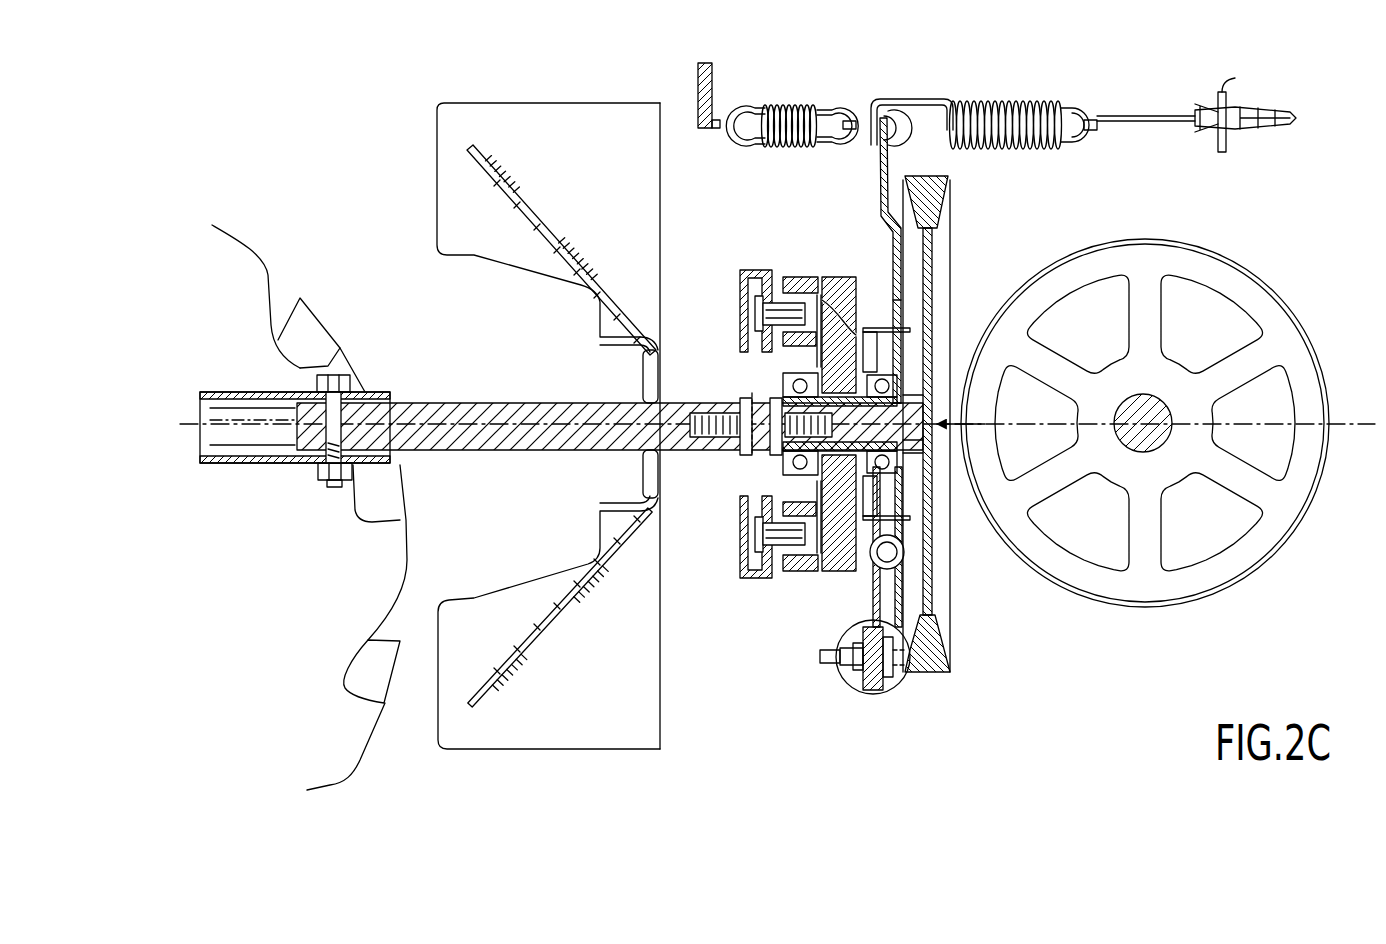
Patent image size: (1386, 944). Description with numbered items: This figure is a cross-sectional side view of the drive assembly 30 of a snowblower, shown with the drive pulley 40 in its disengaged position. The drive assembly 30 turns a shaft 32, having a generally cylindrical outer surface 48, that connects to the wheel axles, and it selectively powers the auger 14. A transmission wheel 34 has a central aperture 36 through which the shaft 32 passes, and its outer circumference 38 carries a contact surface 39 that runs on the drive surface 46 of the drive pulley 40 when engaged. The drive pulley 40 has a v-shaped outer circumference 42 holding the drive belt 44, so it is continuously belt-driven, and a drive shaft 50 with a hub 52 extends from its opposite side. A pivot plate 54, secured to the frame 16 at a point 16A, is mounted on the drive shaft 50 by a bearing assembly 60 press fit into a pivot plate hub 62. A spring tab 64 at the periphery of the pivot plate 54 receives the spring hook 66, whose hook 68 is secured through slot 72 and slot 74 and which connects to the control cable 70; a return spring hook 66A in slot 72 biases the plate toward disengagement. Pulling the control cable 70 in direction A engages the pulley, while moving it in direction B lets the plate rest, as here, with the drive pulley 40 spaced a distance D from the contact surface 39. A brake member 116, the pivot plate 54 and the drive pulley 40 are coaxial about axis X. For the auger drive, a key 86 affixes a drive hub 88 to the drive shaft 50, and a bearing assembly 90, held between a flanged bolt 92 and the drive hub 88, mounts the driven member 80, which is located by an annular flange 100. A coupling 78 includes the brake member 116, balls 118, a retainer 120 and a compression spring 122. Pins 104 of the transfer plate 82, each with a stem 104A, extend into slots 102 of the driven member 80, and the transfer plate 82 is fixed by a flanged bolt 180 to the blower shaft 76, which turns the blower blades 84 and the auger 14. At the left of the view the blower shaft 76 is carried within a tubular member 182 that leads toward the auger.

The auger 14 is at (304, 597).
The frame 16 is at (700, 82).
The point 16A is at (878, 692).
The drive assembly 30 is at (1042, 718).
The shaft 32 is at (1152, 404).
The transmission wheel 34 is at (1152, 436).
The aperture 36 is at (1176, 425).
The outer circumference 38 is at (1272, 573).
The contact surface 39 is at (1118, 608).
The drive pulley 40 is at (968, 232).
The v-shaped outer circumference 42 is at (933, 670).
The drive belt 44 is at (945, 180).
The drive surface 46 is at (940, 600).
The outer surface 48 is at (1178, 400).
The drive shaft 50 is at (950, 440).
The hub 52 is at (940, 400).
The pivot plate 54 is at (862, 215).
The bearing assembly 60 is at (935, 478).
The pivot plate hub 62 is at (797, 365).
The spring tab 64 is at (842, 110).
The spring hook 66 is at (1010, 104).
The return spring hook 66A is at (776, 108).
The hook 68 is at (920, 100).
The control cable 70 is at (1140, 116).
The slot 72 is at (866, 140).
The slot 74 is at (881, 150).
The blower shaft 76 is at (505, 402).
The coupling 78 is at (840, 268).
The driven member 80 is at (782, 268).
The transfer plate 82 is at (745, 600).
The blower blades 84 is at (534, 164).
The key 86 is at (905, 400).
The drive hub 88 is at (852, 335).
The bearing assembly 90 is at (790, 388).
The flanged bolt 92 is at (776, 445).
The annular flange 100 is at (818, 388).
The slots 102 is at (762, 283).
The pins 104 is at (758, 312).
The stem 104A is at (795, 308).
The brake member 116 is at (870, 605).
The balls 118 is at (912, 580).
The retainer 120 is at (872, 555).
The compression spring 122 is at (930, 540).
The flanged bolt 180 is at (660, 440).
The tube 182 is at (240, 392).
The direction A is at (925, 43).
The direction B is at (810, 43).
The distance D is at (988, 424).
The axis X is at (565, 450).